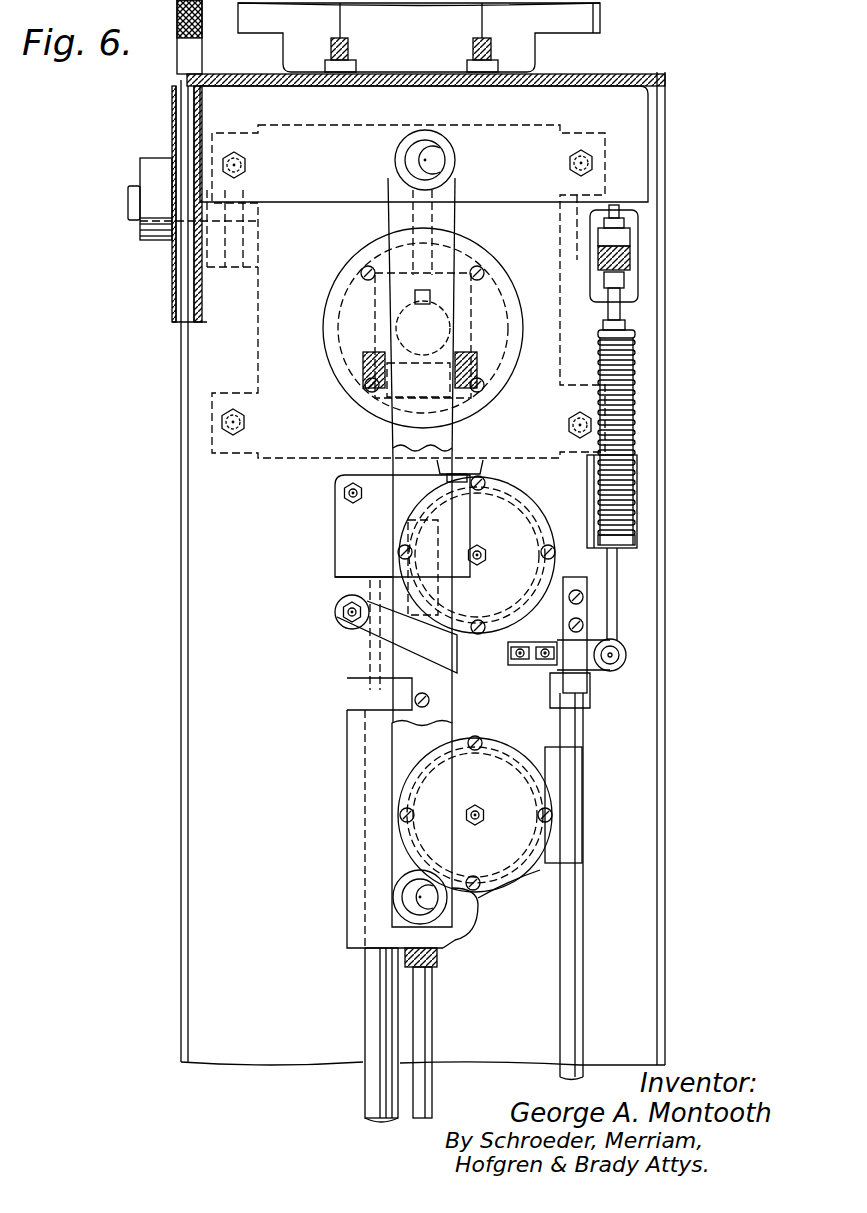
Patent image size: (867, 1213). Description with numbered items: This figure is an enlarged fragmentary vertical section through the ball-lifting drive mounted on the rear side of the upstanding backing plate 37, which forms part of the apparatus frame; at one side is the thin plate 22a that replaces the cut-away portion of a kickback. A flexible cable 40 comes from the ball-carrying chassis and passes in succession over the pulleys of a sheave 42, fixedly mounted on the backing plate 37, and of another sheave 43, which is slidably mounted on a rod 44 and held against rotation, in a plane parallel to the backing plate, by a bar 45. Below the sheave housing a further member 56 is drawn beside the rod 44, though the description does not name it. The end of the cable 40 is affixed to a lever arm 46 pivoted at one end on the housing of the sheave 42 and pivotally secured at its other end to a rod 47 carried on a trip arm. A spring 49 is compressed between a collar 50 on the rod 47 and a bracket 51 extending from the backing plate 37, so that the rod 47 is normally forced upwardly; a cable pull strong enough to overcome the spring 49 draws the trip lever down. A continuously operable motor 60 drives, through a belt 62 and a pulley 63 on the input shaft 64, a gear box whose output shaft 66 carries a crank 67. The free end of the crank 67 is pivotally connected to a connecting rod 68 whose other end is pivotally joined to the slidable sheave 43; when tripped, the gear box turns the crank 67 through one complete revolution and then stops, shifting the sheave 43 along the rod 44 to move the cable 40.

The thin plate 22a is at (686, 726).
The backing plate 37 is at (200, 655).
The flexible cable 40 is at (530, 705).
The sheave 42 is at (545, 545).
The sheave 43 is at (500, 878).
The rod 44 is at (368, 993).
The bar 45 is at (585, 945).
The lever arm 46 is at (620, 662).
The rod 47 is at (620, 312).
The spring 49 is at (628, 438).
The collar 50 is at (625, 328).
The bracket 51 is at (630, 517).
The shaft 56 is at (432, 1018).
The motor 60 is at (520, 48).
The belt 62 is at (187, 57).
The pulley 63 is at (172, 120).
The input shaft 64 is at (130, 190).
The output shaft 66 is at (400, 318).
The crank 67 is at (386, 220).
The connecting rod 68 is at (400, 440).